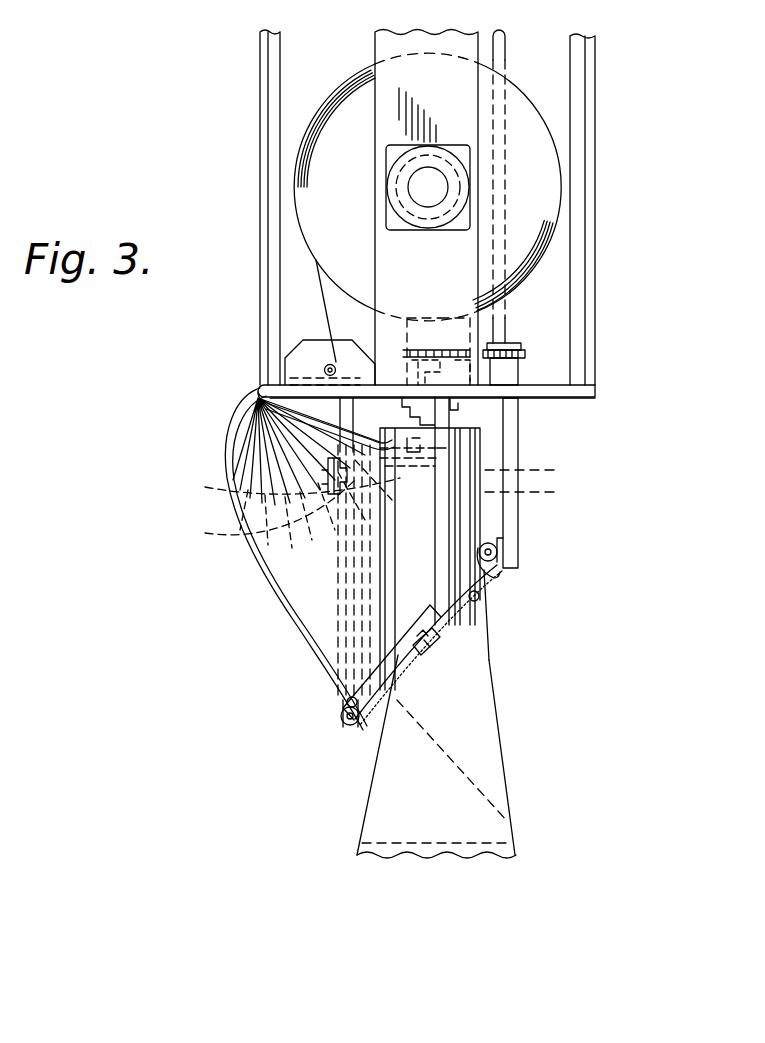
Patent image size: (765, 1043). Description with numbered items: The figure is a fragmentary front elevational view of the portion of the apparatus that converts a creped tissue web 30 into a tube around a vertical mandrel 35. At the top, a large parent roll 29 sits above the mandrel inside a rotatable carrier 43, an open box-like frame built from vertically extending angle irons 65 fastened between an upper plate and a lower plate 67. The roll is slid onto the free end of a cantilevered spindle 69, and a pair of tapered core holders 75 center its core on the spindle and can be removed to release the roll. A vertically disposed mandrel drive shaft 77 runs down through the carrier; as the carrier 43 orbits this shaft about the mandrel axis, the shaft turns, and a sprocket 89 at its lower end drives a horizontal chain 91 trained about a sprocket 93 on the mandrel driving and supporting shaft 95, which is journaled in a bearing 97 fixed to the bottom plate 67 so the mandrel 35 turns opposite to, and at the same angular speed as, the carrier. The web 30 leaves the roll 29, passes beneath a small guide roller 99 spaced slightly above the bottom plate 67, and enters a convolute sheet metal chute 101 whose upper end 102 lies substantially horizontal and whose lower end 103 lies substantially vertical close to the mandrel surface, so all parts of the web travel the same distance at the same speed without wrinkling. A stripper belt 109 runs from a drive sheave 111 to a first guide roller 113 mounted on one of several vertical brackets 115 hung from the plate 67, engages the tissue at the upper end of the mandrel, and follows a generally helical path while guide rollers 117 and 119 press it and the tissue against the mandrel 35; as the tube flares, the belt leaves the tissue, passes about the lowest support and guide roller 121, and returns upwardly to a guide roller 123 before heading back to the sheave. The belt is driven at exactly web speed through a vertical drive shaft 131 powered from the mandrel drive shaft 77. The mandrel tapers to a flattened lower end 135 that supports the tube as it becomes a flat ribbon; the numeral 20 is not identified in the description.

The fabric web 20 is at (478, 858).
The parent roll 29 is at (545, 148).
The web 30 is at (315, 296).
The mandrel 35 is at (483, 520).
The carrier 43 is at (241, 178).
The angle irons 65 is at (268, 56).
The lower plate 67 is at (580, 383).
The spindle 69 is at (430, 182).
The tapered core holders 75 is at (426, 228).
The mandrel drive shaft 77 is at (500, 34).
The sprocket 89 is at (516, 350).
The chain 91 is at (464, 346).
The sprocket 93 is at (412, 344).
The mandrel driving and supporting shaft 95 is at (378, 346).
The bearing 97 is at (462, 400).
The guide roller 99 is at (325, 368).
The chute 101 is at (312, 374).
The upper end 102 is at (237, 432).
The lower end 103 is at (385, 640).
The stripper belt 109 is at (480, 690).
The drive sheave 111 is at (504, 511).
The first guide roller 113 is at (285, 525).
The vertical brackets 115 is at (500, 550).
The guide roller 117 is at (498, 572).
The guide roller 119 is at (482, 650).
The lowest support and guide roller 121 is at (348, 724).
The guide roller 123 is at (323, 473).
The drive shaft 131 is at (473, 451).
The flattened lower end 135 is at (380, 858).